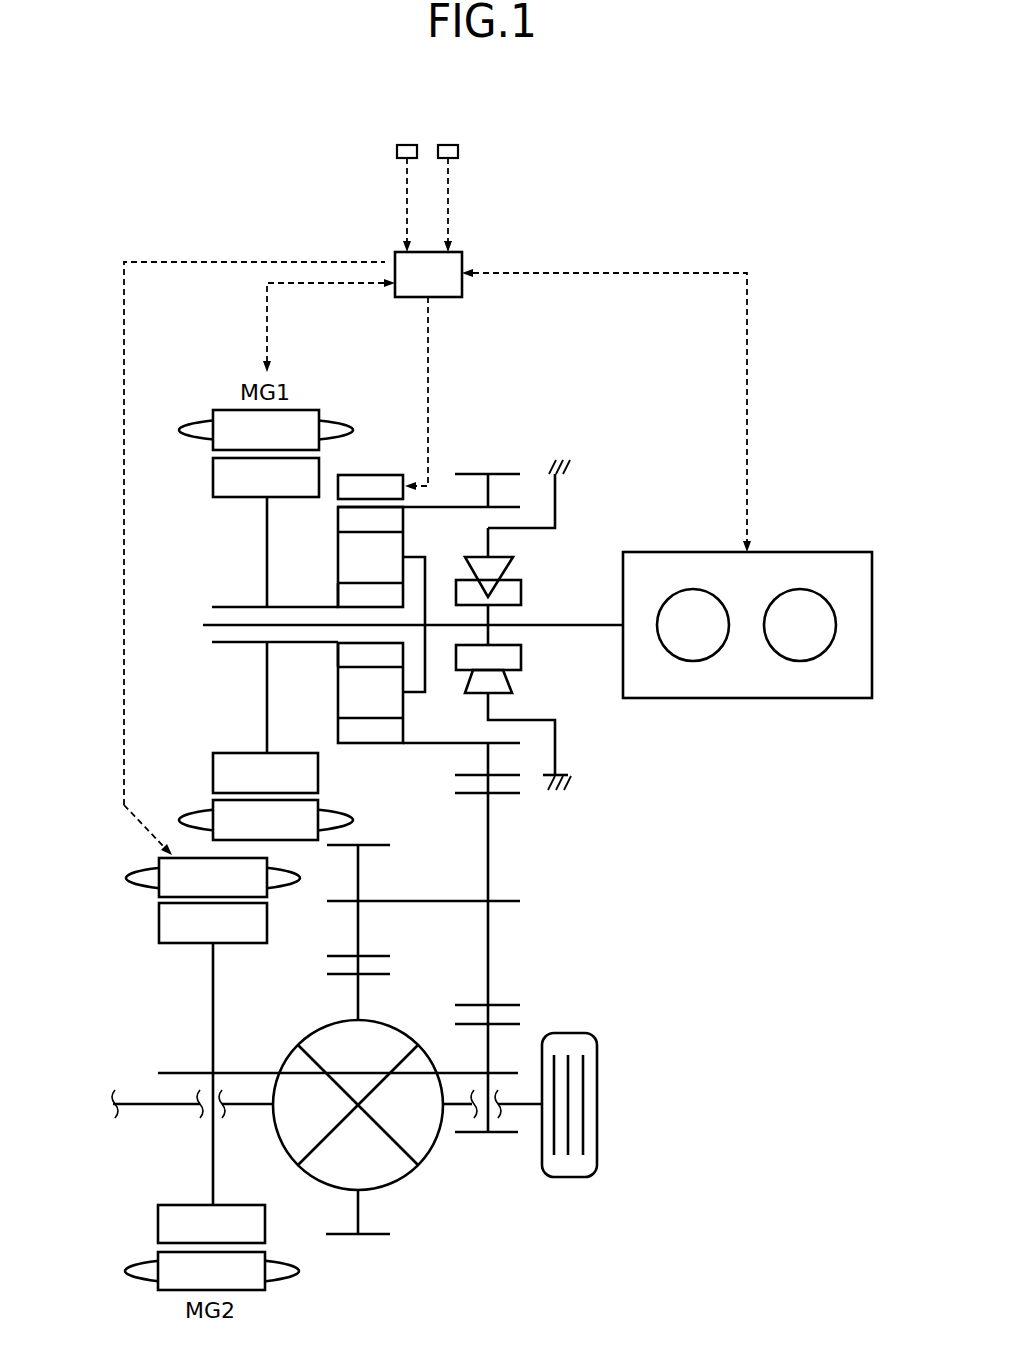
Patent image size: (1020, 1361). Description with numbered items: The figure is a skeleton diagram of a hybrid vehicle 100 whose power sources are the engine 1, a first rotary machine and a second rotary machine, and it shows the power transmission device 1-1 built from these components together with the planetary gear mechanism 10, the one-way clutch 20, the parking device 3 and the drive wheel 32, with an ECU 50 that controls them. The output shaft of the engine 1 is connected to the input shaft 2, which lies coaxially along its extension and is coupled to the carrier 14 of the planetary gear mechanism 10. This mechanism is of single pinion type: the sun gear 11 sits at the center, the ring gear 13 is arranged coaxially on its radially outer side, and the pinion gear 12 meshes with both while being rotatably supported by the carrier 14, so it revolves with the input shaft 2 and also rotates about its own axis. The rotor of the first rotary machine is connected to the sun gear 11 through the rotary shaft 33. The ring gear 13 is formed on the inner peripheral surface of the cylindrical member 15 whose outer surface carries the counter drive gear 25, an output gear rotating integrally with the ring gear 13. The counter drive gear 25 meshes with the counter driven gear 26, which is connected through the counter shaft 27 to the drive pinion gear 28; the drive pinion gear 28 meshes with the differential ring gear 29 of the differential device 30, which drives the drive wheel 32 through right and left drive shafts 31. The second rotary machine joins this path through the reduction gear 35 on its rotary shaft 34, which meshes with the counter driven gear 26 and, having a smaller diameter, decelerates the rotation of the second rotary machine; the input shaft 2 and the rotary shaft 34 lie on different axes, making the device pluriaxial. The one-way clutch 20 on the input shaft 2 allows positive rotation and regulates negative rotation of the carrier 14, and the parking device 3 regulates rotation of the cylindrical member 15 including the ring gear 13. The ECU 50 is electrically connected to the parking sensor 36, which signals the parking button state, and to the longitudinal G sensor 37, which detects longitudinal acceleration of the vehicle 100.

The engine 1 is at (797, 550).
The power transmission device 1-1 is at (462, 395).
The input shaft 2 is at (578, 623).
The parking device 3 is at (383, 452).
The planetary gear mechanism 10 is at (335, 625).
The sun gear 11 is at (338, 592).
The pinion gear 12 is at (338, 555).
The ring gear 13 is at (338, 518).
The carrier 14 is at (425, 562).
The cylindrical member 15 is at (445, 505).
The one-way clutch 20 is at (540, 568).
The counter drive gear 25 is at (455, 777).
The counter driven gear 26 is at (507, 788).
The counter shaft 27 is at (432, 900).
The drive pinion gear 28 is at (385, 957).
The differential ring gear 29 is at (327, 973).
The differential device 30 is at (416, 1013).
The drive shaft 31 is at (247, 1106).
The drive wheel 32 is at (598, 1136).
The rotary shaft 33 is at (236, 606).
The rotary shaft 34 is at (238, 1072).
The reduction gear 35 is at (503, 1023).
The parking sensor 36 is at (406, 144).
The longitudinal G sensor 37 is at (448, 144).
The ECU 50 is at (430, 250).
The vehicle 100 is at (130, 232).